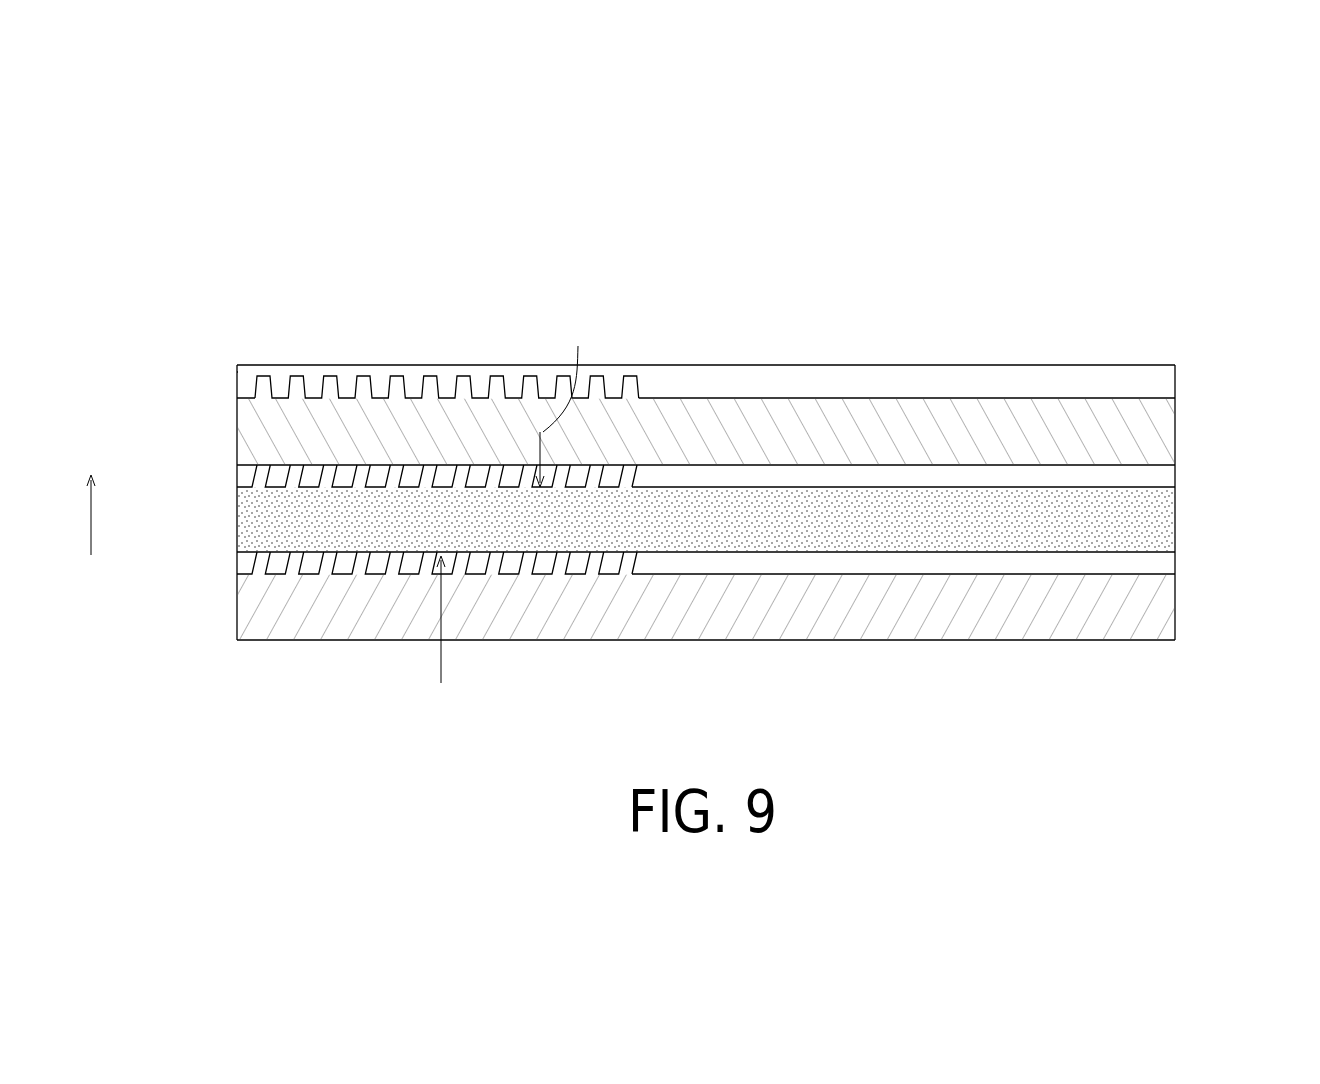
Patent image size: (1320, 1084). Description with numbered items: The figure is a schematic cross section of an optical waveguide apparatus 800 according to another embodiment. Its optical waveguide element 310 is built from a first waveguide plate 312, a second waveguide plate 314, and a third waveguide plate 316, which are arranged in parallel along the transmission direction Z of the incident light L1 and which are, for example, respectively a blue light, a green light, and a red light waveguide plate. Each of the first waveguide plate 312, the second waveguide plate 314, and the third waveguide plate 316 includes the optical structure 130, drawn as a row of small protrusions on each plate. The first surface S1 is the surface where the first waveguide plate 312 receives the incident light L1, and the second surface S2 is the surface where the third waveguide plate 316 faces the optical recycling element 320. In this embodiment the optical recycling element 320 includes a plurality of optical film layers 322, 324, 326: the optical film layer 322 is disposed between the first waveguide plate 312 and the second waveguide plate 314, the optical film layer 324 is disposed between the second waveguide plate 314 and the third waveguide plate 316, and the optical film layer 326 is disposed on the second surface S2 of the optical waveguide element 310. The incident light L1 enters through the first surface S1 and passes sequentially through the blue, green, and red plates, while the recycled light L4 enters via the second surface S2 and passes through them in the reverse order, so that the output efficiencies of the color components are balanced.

The optical structure 130 is at (226, 374).
The optical waveguide element 310 is at (774, 519).
The first waveguide plate 312 is at (743, 607).
The second waveguide plate 314 is at (1160, 519).
The third waveguide plate 316 is at (1158, 432).
The optical recycling element 320 is at (777, 443).
The optical film layer 322 is at (1085, 563).
The optical film layer 324 is at (1003, 477).
The optical film layer 326 is at (1158, 382).
The optical waveguide apparatus 800 is at (1312, 757).
The incident light L1 is at (441, 638).
The recycled light L4 is at (564, 400).
The first surface S1 is at (925, 650).
The second surface S2 is at (926, 388).
The transmission direction Z is at (102, 515).